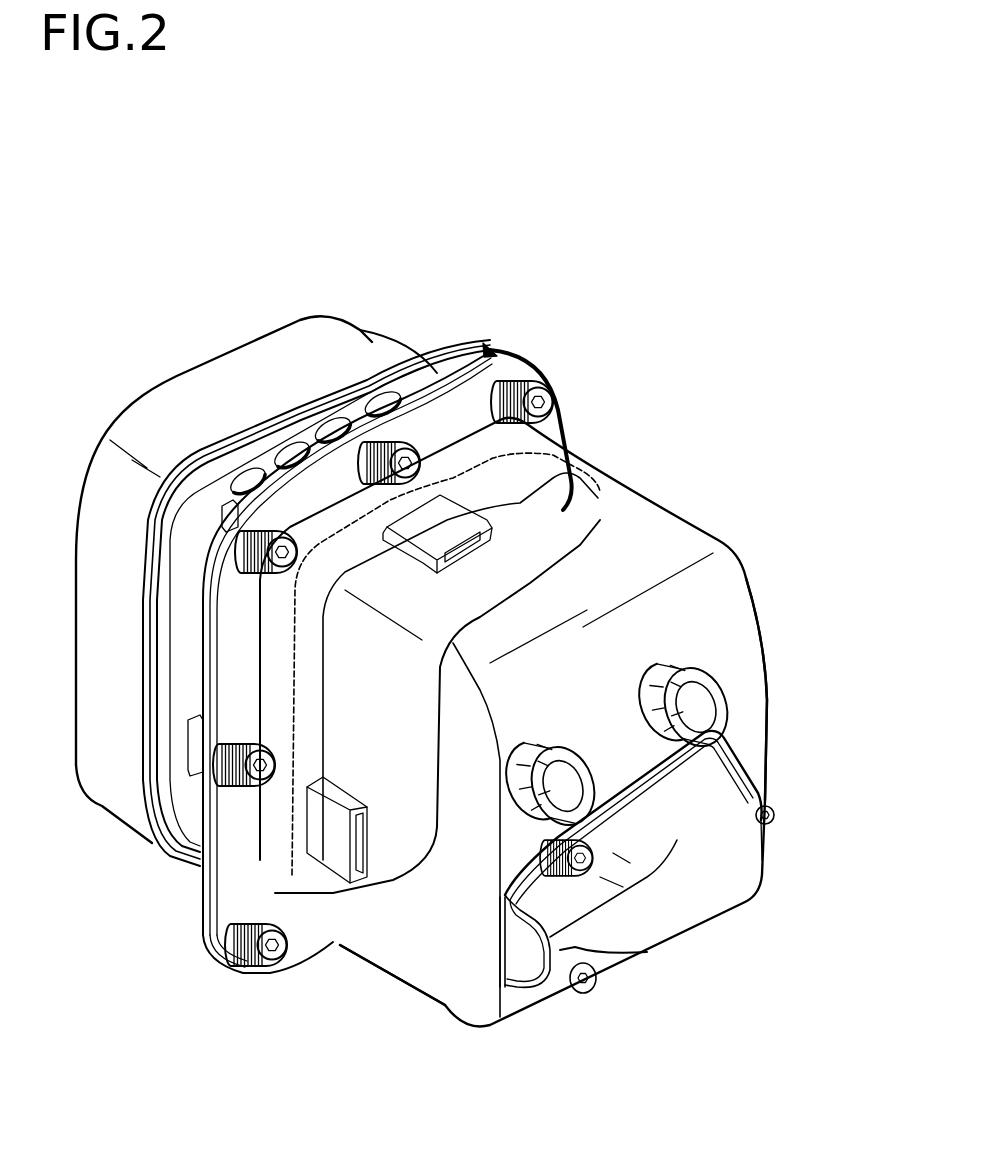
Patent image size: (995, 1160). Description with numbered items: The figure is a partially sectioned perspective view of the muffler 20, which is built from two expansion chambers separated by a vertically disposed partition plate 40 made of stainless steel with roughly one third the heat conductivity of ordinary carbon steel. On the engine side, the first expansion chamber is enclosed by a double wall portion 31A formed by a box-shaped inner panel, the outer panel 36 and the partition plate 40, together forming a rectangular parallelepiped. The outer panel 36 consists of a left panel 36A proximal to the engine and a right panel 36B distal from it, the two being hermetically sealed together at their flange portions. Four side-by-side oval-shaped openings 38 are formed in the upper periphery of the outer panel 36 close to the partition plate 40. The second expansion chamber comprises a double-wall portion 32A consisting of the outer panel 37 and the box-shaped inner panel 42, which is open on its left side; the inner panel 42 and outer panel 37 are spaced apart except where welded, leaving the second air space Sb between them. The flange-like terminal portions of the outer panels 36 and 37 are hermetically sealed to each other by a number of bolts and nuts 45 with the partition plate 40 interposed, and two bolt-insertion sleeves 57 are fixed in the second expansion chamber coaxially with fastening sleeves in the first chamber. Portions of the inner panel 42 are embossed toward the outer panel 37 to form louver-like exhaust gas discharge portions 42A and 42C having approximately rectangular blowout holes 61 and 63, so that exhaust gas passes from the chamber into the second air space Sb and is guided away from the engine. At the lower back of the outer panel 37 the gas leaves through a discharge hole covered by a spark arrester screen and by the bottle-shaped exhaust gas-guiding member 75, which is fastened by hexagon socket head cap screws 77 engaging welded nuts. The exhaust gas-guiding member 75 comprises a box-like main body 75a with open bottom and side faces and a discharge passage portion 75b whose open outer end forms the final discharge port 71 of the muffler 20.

The muffler 20 is at (675, 480).
The double wall portion 31A is at (100, 803).
The double-wall portion 32A is at (360, 963).
The outer panel 36 is at (341, 518).
The left panel 36A is at (335, 343).
The right panel 36B is at (340, 217).
The outer panel 37 is at (663, 533).
The oval-shaped openings 38 is at (295, 447).
The partition plate 40 is at (200, 905).
The inner panel 42 is at (566, 727).
The exhaust gas discharge portion 42A is at (479, 541).
The exhaust gas discharge portion 42C is at (365, 797).
The bolts and nuts 45 is at (417, 450).
The bolt-insertion sleeves 57 is at (640, 713).
The blowout hole 61 is at (462, 548).
The blowout hole 63 is at (362, 837).
The final discharge port 71 is at (477, 963).
The exhaust gas-guiding member 75 is at (626, 903).
The main body 75a is at (675, 923).
The discharge passage portion 75b is at (600, 953).
The hexagon socket head cap screws 77 is at (775, 818).
The second air space Sb is at (573, 478).